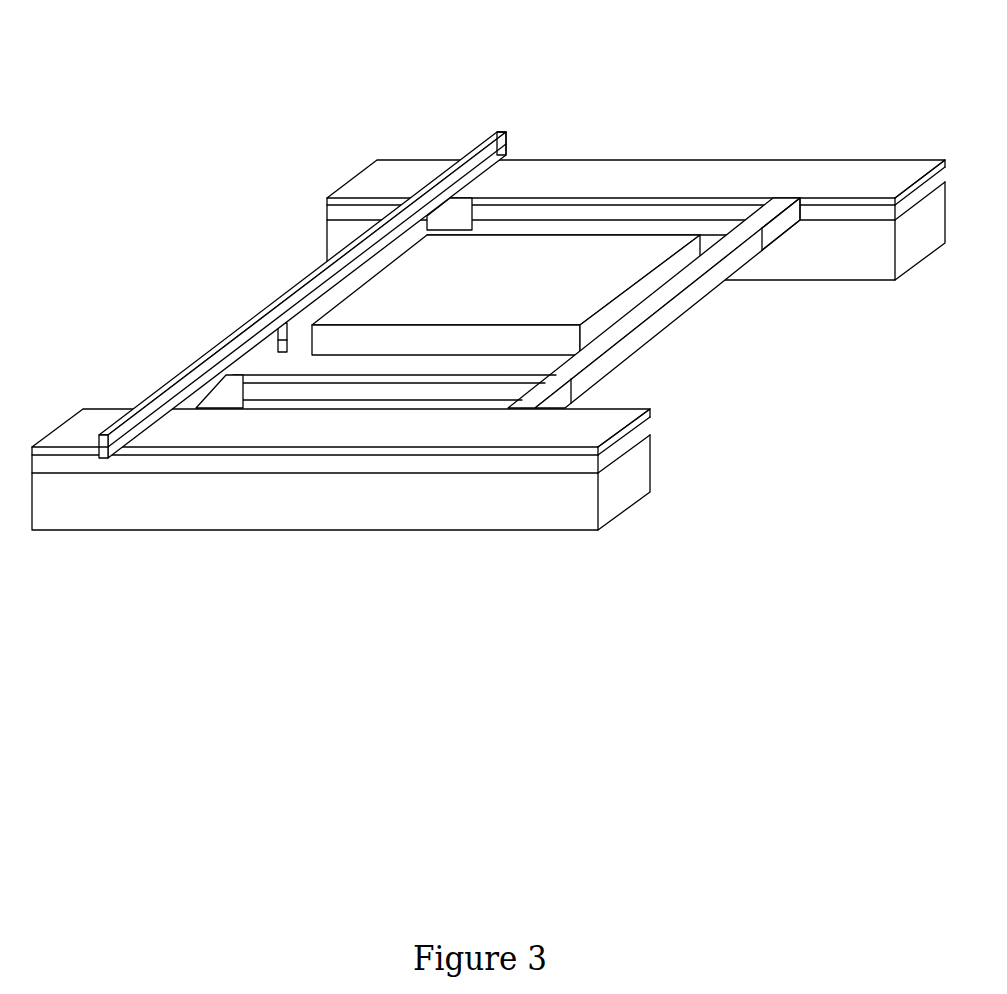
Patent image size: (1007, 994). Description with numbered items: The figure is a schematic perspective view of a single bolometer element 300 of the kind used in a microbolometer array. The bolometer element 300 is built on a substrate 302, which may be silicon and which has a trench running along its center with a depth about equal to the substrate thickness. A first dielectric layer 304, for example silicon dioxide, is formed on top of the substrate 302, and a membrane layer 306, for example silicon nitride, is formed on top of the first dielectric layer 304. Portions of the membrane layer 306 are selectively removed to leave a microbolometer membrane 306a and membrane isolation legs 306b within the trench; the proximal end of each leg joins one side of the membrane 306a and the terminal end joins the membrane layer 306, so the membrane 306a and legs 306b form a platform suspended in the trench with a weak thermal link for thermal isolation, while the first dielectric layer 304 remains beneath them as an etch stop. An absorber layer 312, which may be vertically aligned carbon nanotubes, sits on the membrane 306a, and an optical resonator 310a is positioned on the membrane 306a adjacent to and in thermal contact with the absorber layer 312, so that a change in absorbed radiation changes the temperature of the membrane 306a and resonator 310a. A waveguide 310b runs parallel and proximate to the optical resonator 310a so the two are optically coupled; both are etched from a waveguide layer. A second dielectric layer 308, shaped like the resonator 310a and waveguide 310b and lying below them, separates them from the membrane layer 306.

The bolometer element 300 is at (488, 286).
The substrate 302 is at (627, 490).
The first dielectric layer 304 is at (643, 425).
The membrane layer 306 is at (88, 425).
The microbolometer membrane 306a is at (672, 292).
The membrane isolation legs 306b is at (783, 198).
The second dielectric layer 308 is at (193, 388).
The optical resonator 310a is at (283, 322).
The waveguide 310b is at (462, 75).
The absorber layer 312 is at (526, 295).